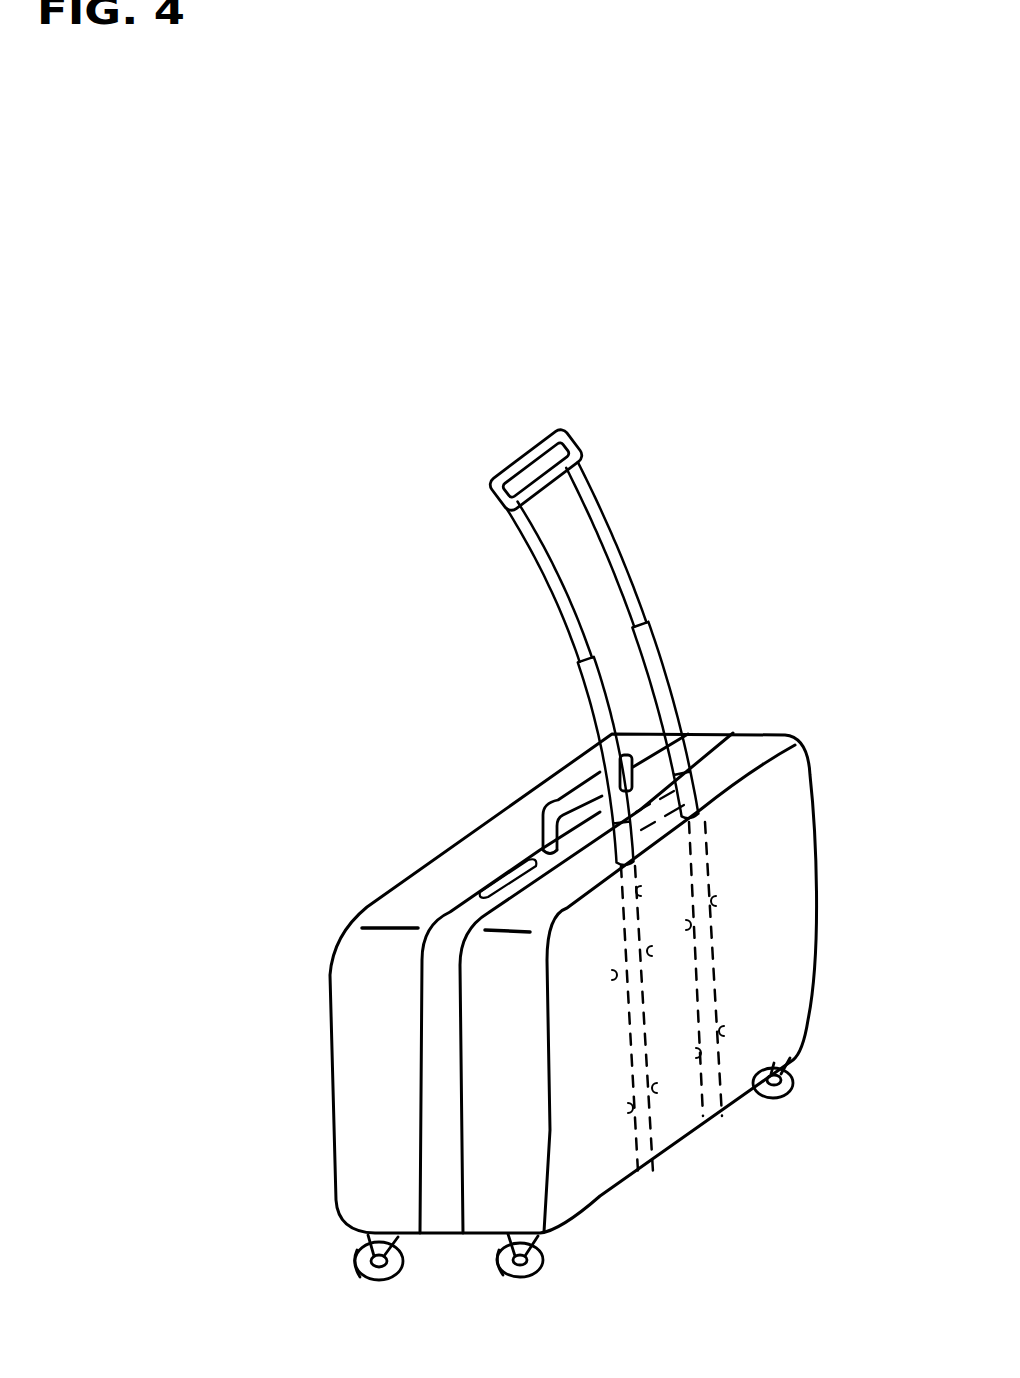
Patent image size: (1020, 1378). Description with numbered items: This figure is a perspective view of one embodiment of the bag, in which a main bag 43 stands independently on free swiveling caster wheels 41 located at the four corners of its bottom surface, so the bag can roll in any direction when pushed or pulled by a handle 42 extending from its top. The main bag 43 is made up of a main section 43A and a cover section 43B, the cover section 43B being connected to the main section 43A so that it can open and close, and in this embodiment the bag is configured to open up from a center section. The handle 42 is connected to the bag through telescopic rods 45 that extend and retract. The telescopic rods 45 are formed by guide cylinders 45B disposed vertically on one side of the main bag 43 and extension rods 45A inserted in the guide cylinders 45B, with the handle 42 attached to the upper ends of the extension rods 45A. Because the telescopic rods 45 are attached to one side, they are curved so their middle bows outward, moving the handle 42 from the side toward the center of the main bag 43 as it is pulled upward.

The free swiveling caster wheels 41 is at (336, 1267).
The handle 42 is at (533, 457).
The main bag 43 is at (497, 740).
The main section 43A is at (543, 904).
The cover section 43B is at (417, 888).
The telescopic rods 45 is at (826, 670).
The extension rods 45A is at (613, 523).
The guide cylinders 45B is at (712, 850).